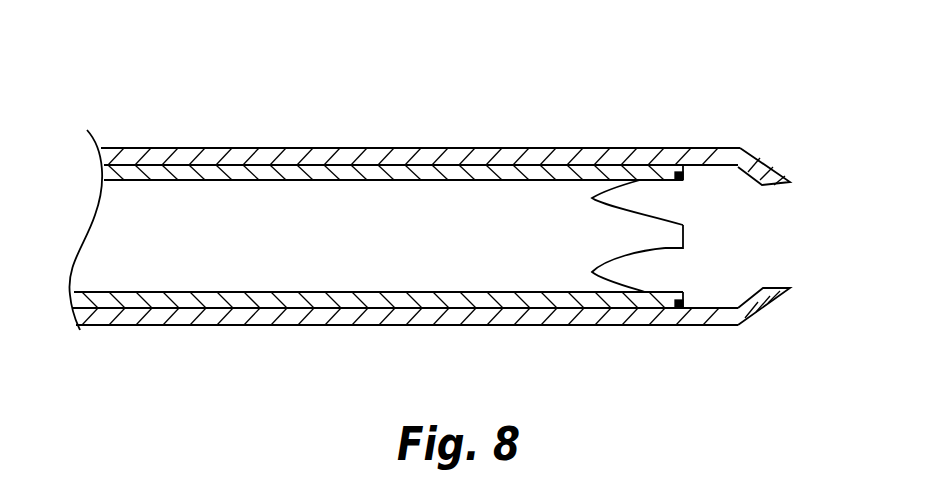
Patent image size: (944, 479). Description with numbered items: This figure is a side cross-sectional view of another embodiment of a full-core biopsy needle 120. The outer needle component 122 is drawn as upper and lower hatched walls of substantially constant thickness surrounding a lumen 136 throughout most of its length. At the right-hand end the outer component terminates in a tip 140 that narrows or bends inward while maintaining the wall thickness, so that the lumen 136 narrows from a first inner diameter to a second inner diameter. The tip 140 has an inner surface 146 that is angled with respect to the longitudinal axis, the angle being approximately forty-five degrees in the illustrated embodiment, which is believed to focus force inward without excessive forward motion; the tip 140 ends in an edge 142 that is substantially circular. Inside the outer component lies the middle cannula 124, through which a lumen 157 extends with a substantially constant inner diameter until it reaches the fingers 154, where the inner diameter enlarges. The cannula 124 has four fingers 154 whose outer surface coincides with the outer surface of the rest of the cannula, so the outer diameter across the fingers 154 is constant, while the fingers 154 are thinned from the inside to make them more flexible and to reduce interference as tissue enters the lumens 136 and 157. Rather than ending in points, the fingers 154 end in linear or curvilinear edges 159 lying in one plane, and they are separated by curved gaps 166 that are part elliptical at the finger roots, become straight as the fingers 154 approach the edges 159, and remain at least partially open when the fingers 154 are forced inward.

The needle 120 is at (478, 110).
The outer needle component 122 is at (330, 160).
The middle cannula 124 is at (220, 300).
The lumen 136 is at (727, 250).
The tip 140 is at (782, 150).
The edge 142 is at (790, 288).
The inner surface 146 is at (745, 165).
The fingers 154 is at (673, 170).
The lumen 157 is at (332, 245).
The edges 159 is at (702, 170).
The curved gaps 166 is at (620, 200).